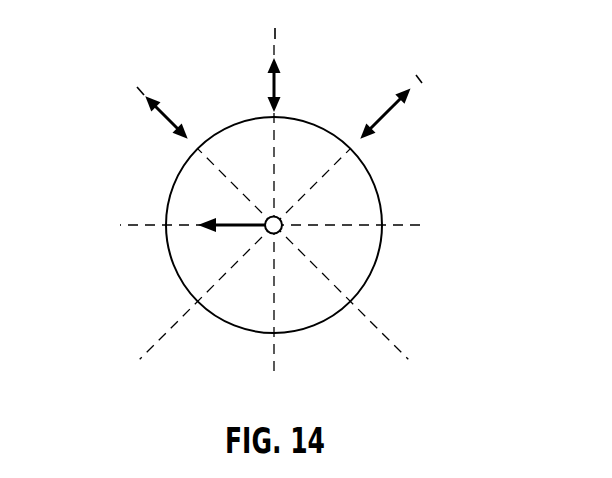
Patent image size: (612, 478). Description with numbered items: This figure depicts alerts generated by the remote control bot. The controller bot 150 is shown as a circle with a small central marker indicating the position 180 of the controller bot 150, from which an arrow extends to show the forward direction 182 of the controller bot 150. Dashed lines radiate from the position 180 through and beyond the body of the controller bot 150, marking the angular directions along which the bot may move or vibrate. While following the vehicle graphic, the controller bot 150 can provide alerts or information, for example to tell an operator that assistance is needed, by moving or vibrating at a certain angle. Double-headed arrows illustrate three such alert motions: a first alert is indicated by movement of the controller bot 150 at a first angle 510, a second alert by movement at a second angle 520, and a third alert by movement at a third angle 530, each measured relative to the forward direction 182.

The controller bot 150 is at (367, 165).
The position of the controller bot 180 is at (276, 213).
The forward direction of the controller bot 182 is at (250, 224).
The first angle 510 is at (138, 89).
The second angle 520 is at (277, 33).
The third angle 530 is at (419, 80).